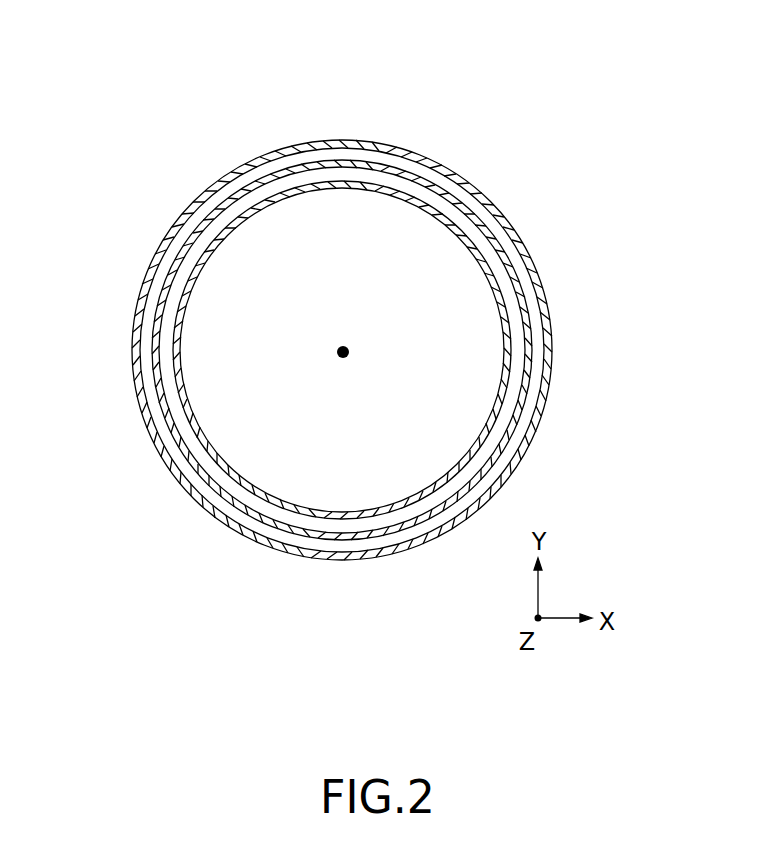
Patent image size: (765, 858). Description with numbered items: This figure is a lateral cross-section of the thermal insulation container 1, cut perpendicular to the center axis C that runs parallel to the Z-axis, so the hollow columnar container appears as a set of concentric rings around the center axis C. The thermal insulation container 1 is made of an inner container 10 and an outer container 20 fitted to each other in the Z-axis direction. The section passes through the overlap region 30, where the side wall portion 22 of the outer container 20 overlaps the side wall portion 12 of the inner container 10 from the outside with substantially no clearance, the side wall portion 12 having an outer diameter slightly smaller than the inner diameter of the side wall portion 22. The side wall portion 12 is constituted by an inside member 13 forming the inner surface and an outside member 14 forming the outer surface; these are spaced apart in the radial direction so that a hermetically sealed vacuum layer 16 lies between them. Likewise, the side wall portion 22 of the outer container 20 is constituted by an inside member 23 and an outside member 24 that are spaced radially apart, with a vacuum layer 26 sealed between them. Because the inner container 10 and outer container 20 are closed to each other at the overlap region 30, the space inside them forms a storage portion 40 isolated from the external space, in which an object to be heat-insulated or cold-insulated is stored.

The thermal insulation container 1 is at (540, 134).
The inner container 10 is at (407, 632).
The side wall portion 12 is at (342, 424).
The inside member 13 is at (390, 515).
The outside member 14 is at (305, 537).
The vacuum layer 16 is at (342, 525).
The outer container 20 is at (393, 67).
The side wall portion 22 is at (342, 353).
The inside member 23 is at (289, 164).
The outside member 24 is at (373, 141).
The vacuum layer 26 is at (332, 154).
The overlap region 30 is at (203, 529).
The storage portion 40 is at (328, 313).
The center axis C is at (343, 371).